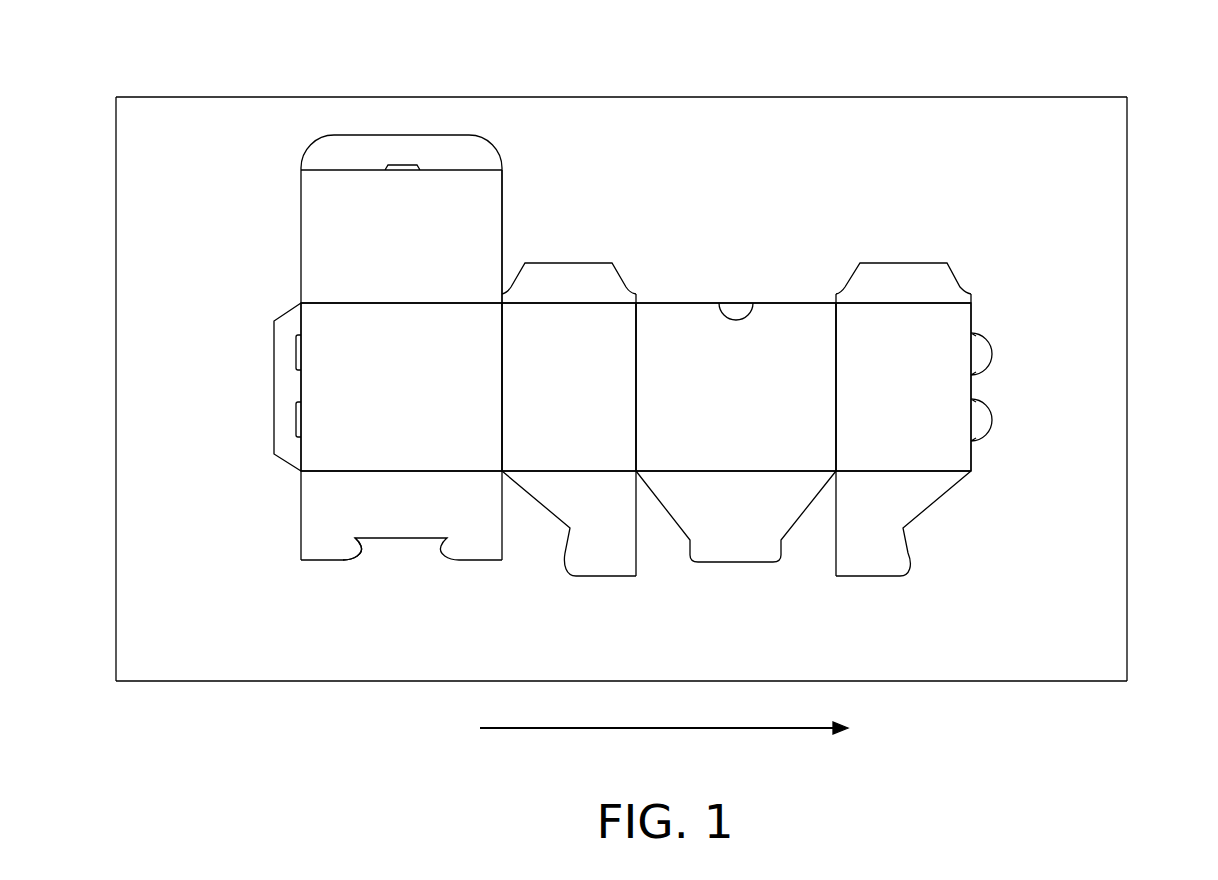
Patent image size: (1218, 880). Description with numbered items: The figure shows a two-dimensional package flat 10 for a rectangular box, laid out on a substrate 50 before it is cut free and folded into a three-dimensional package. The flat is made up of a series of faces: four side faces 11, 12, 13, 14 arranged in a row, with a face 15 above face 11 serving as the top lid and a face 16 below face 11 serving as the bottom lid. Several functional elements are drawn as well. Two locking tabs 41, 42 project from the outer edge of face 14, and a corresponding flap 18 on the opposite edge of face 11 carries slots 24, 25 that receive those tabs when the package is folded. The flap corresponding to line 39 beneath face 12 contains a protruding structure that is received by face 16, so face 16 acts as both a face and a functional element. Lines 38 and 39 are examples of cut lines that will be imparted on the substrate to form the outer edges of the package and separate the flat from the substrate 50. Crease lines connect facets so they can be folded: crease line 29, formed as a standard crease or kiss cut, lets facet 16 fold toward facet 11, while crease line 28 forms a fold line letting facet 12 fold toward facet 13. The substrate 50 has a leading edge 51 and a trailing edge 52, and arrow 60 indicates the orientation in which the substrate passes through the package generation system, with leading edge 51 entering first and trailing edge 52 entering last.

The package flat 10 is at (476, 66).
The face 11 is at (401, 387).
The face 12 is at (569, 367).
The face 13 is at (736, 387).
The face 14 is at (903, 367).
The face 15 is at (401, 190).
The face 16 is at (401, 530).
The flap 18 is at (284, 382).
The slot 24 is at (297, 352).
The slot 25 is at (297, 420).
The crease line 28 is at (655, 346).
The crease line 29 is at (352, 485).
The line 38 is at (502, 219).
The line 39 is at (603, 576).
The locking tab 41 is at (993, 354).
The locking tab 42 is at (993, 420).
The substrate 50 is at (835, 97).
The leading edge 51 is at (1127, 380).
The trailing edge 52 is at (116, 380).
The arrow 60 is at (665, 730).